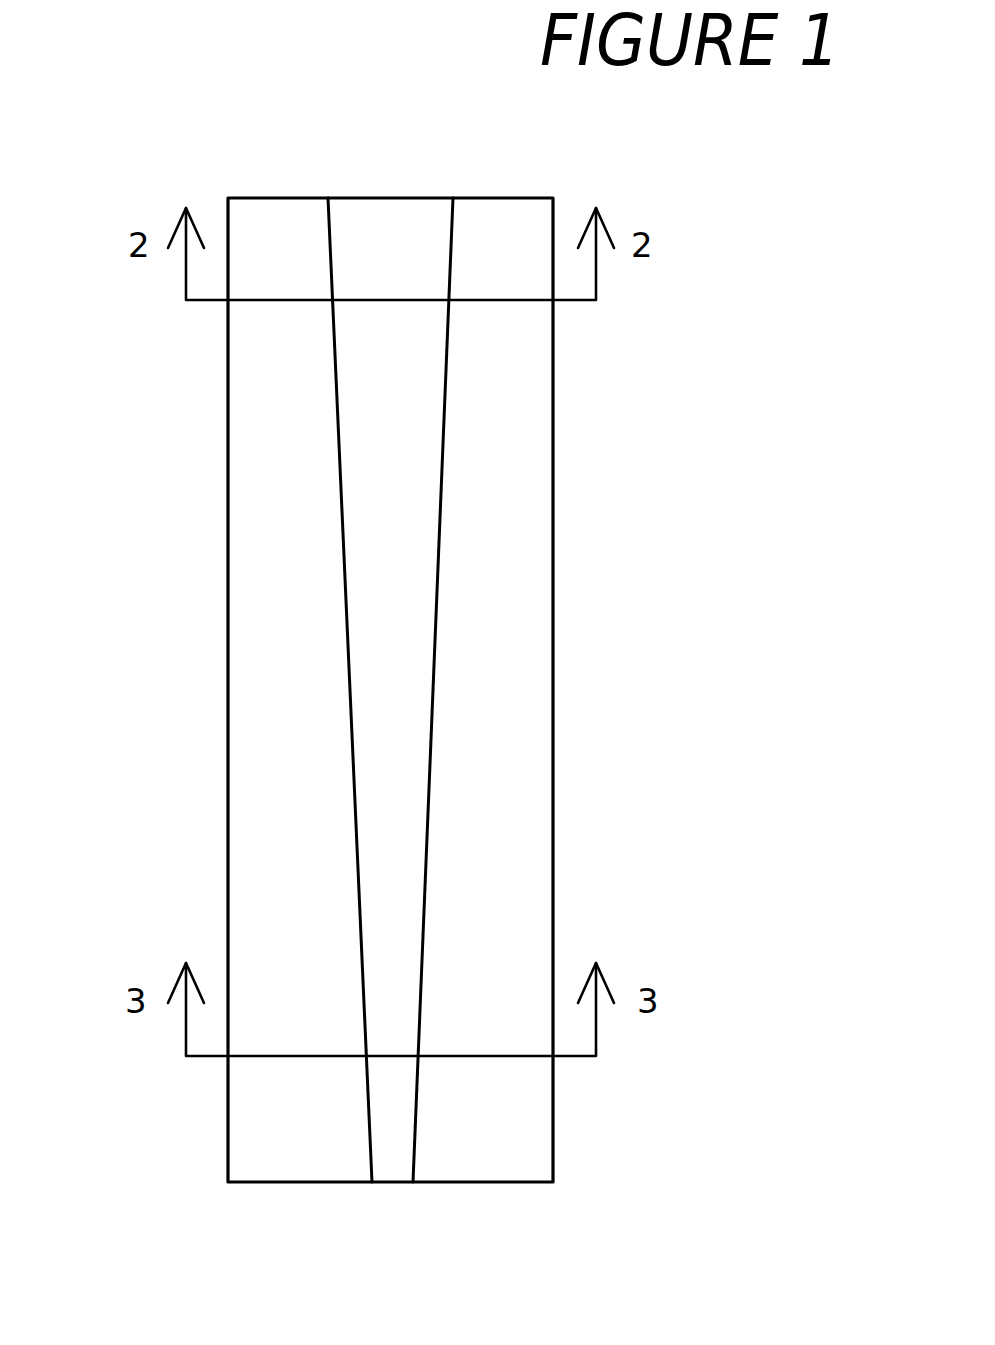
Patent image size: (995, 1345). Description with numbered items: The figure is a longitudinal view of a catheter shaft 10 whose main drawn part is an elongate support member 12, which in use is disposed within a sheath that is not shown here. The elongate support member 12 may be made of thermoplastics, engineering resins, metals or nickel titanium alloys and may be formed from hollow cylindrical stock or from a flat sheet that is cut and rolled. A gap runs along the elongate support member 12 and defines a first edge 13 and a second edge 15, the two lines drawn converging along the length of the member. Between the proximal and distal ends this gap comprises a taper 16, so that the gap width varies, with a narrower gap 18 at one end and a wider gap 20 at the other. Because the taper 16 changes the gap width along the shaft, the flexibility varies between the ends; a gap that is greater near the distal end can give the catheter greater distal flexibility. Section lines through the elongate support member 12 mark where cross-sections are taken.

The catheter shaft 10 is at (401, 642).
The elongate support member 12 is at (285, 823).
The first edge 13 is at (327, 230).
The second edge 15 is at (454, 233).
The taper 16 is at (457, 642).
The narrower gap 18 is at (393, 1133).
The wider gap 20 is at (403, 348).